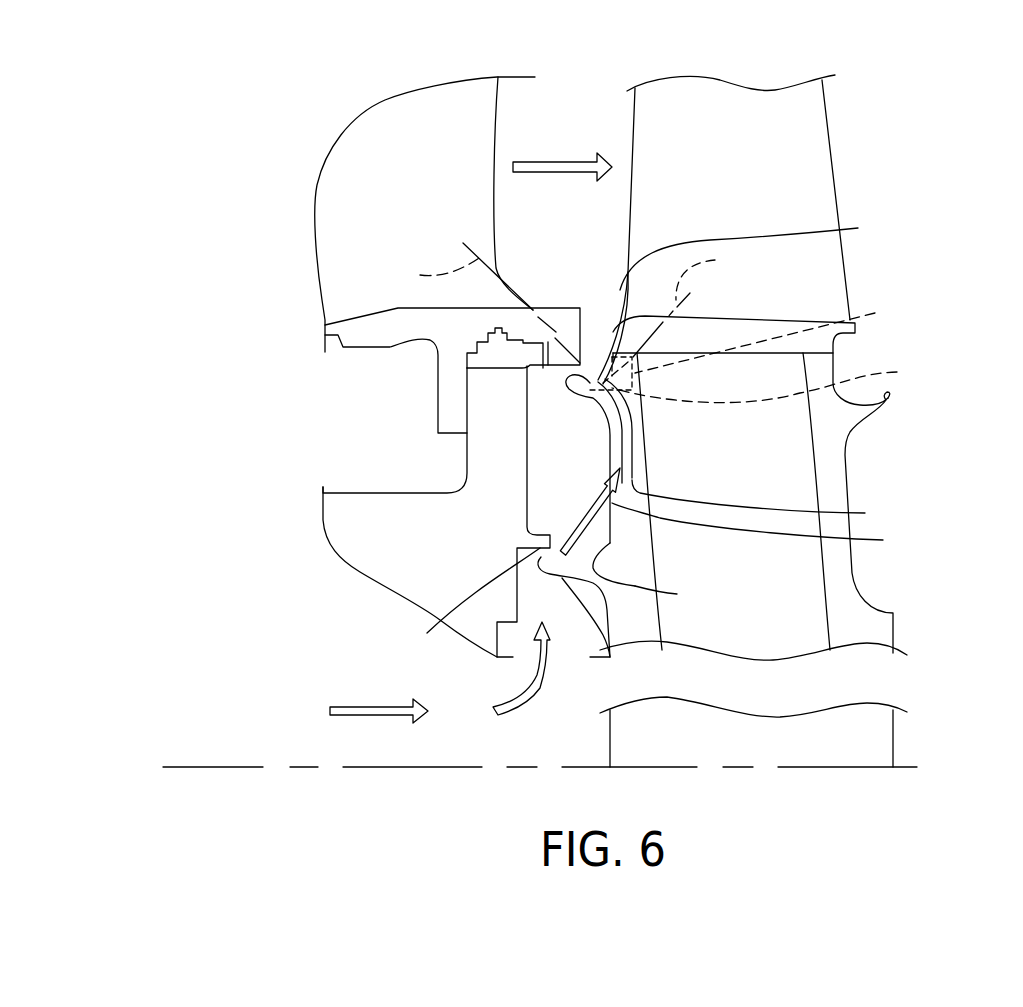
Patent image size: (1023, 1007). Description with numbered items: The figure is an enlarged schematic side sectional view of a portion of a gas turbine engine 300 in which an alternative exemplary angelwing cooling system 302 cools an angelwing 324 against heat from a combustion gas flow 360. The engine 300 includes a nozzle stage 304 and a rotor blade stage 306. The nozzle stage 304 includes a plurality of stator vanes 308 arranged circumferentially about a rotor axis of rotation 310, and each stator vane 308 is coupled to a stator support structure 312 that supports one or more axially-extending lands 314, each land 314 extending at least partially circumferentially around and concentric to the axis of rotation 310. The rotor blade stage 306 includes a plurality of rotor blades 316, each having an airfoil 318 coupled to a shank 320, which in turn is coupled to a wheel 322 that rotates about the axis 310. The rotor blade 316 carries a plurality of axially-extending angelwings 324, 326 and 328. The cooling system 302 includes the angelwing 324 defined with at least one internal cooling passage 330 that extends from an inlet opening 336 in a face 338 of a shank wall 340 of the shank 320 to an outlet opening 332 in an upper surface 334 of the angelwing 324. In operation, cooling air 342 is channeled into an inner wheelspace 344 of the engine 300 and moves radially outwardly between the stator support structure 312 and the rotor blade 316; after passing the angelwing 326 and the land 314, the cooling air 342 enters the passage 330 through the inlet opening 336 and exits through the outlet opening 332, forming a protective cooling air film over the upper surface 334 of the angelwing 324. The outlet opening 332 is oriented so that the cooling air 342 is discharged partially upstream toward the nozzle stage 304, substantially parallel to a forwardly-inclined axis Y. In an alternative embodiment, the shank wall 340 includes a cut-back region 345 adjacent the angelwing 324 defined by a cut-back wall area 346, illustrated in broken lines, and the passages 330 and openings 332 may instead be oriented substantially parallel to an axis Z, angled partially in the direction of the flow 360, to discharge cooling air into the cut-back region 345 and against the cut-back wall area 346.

The gas turbine engine 300 is at (222, 88).
The angelwing cooling system 302 is at (652, 445).
The nozzle stage 304 is at (290, 259).
The rotor blade stage 306 is at (870, 262).
The stator vane 308 is at (435, 215).
The rotor axis of rotation 310 is at (198, 760).
The stator support structure 312 is at (447, 546).
The land 314 is at (470, 606).
The rotor blade 316 is at (850, 170).
The airfoil 318 is at (757, 215).
The shank 320 is at (760, 449).
The wheel 322 is at (778, 759).
The angelwing 324 is at (578, 396).
The angelwing 326 is at (605, 597).
The angelwing 328 is at (896, 404).
The internal cooling passage 330 is at (772, 506).
The outlet opening 332 is at (763, 251).
The upper surface 334 is at (590, 366).
The inlet opening 336 is at (772, 531).
The face 338 is at (680, 594).
The shank wall 340 is at (640, 533).
The cooling air 342 is at (598, 490).
The inner wheelspace 344 is at (593, 644).
The cut-back region 345 is at (778, 379).
The cut-back wall area 346 is at (778, 335).
The combustion gas flow 360 is at (563, 160).